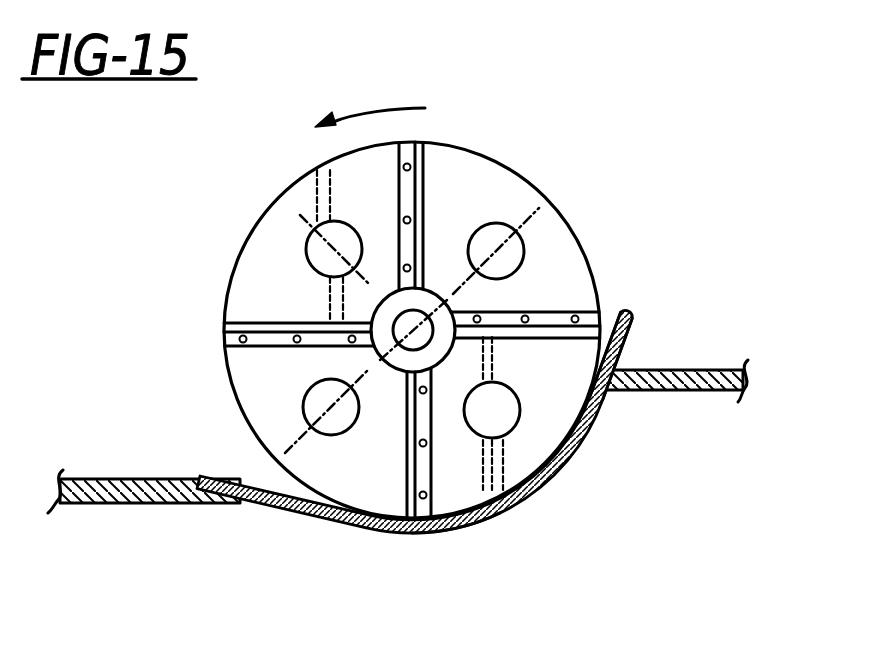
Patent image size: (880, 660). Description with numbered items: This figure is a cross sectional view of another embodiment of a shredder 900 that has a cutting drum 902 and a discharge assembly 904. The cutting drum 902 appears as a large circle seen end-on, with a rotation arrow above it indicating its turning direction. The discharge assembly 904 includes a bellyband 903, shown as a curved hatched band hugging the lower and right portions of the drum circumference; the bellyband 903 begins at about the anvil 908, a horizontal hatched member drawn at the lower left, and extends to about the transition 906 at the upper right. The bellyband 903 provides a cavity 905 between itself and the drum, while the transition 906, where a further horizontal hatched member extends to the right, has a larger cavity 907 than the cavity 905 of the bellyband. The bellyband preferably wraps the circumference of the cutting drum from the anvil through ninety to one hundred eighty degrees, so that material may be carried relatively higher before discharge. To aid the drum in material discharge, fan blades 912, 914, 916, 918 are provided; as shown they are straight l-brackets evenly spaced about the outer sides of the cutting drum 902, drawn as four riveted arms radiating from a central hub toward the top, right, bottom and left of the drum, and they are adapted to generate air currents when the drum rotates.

The shredder 900 is at (603, 154).
The cutting drum 902 is at (277, 257).
The bellyband 903 is at (425, 533).
The discharge assembly 904 is at (647, 428).
The cavity 905 is at (462, 532).
The transition 906 is at (633, 327).
The cavity 907 is at (627, 334).
The anvil 908 is at (262, 497).
The fan blade 912 is at (424, 180).
The fan blade 914 is at (553, 312).
The fan blade 916 is at (434, 473).
The fan blade 918 is at (270, 323).